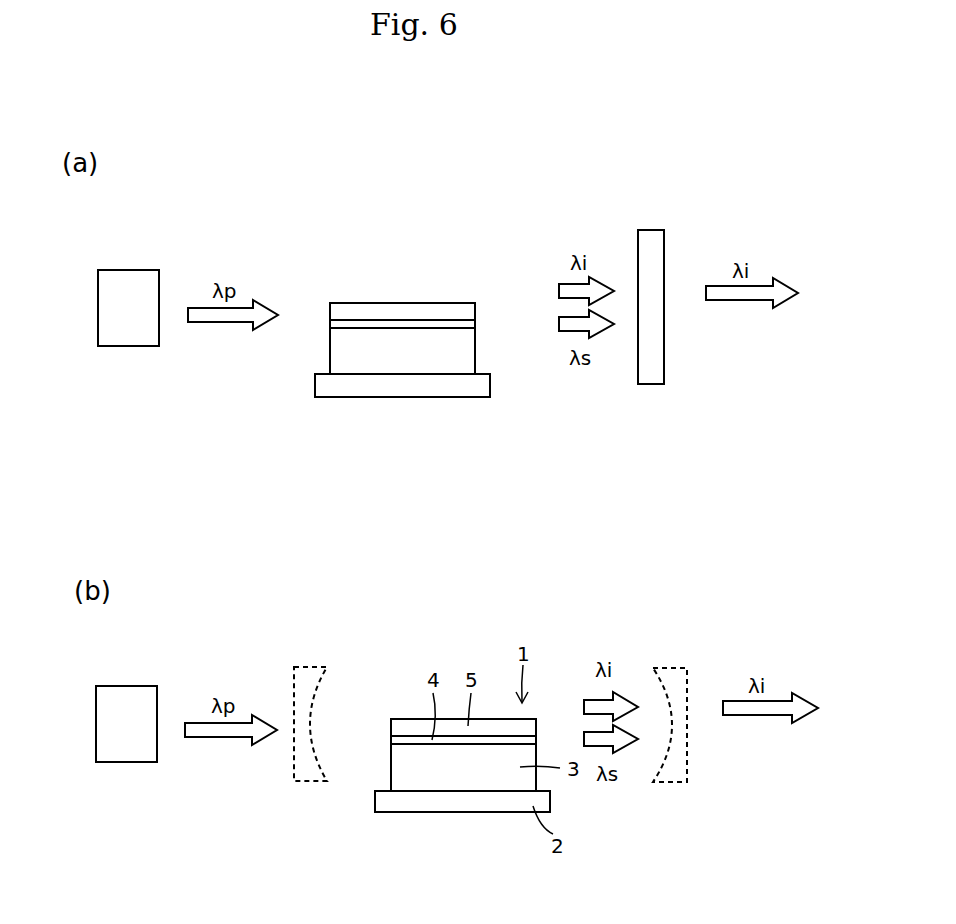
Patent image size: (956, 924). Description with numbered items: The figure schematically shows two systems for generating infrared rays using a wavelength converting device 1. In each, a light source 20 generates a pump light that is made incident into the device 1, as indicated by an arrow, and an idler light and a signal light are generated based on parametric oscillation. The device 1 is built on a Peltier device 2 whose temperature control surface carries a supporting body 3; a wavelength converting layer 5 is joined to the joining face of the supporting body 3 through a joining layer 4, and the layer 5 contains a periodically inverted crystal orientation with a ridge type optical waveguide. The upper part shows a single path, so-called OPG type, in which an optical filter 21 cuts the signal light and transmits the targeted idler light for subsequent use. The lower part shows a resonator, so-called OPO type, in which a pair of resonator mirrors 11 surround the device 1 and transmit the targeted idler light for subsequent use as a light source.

The wavelength converting device 1 is at (417, 334).
The Peltier device 2 is at (473, 390).
The supporting body 3 is at (460, 352).
The joining layer 4 is at (370, 324).
The wavelength converting layer 5 is at (408, 310).
The resonator mirrors 11 is at (318, 666).
The light source 20 is at (142, 322).
The optical filter 21 is at (650, 238).